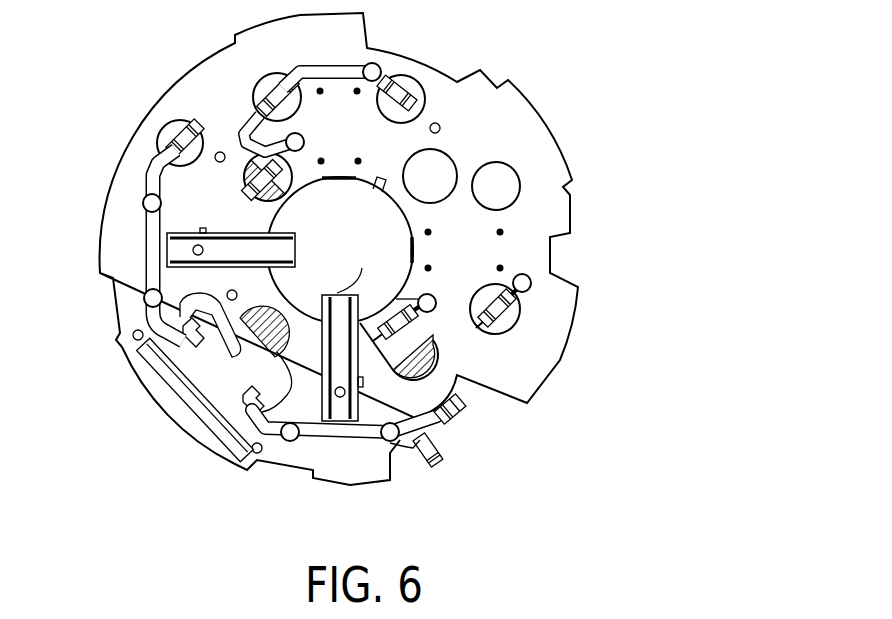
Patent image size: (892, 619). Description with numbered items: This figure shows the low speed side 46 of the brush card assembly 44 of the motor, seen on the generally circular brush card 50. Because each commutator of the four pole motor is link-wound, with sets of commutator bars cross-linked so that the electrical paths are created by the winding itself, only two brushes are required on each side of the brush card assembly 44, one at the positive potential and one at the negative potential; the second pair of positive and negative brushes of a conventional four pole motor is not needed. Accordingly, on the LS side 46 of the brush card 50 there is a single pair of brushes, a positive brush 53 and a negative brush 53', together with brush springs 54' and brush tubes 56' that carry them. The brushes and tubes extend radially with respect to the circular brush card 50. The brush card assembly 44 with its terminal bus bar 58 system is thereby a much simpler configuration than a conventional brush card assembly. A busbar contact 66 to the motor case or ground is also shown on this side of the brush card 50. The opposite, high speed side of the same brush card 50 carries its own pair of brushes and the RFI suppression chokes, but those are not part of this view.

The brush card assembly 44 is at (504, 41).
The LS side 46 is at (547, 327).
The brush card 50 is at (193, 445).
The positive brush 53 is at (356, 268).
The negative brush 53' is at (342, 250).
The brush springs 54' is at (252, 303).
The brush tubes 56' is at (294, 308).
The terminal bus bar 58 is at (143, 222).
The busbar contact 66 is at (443, 457).